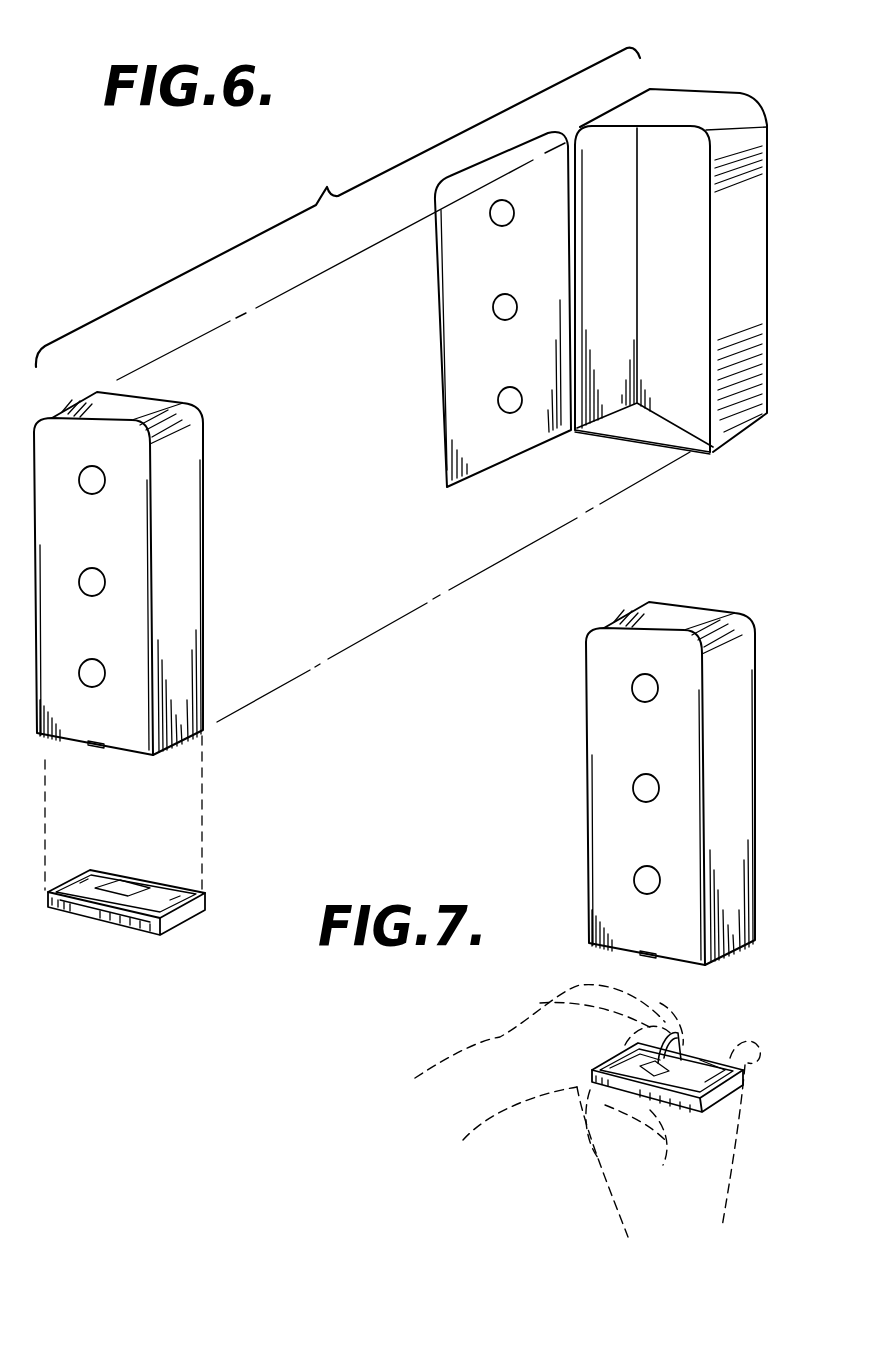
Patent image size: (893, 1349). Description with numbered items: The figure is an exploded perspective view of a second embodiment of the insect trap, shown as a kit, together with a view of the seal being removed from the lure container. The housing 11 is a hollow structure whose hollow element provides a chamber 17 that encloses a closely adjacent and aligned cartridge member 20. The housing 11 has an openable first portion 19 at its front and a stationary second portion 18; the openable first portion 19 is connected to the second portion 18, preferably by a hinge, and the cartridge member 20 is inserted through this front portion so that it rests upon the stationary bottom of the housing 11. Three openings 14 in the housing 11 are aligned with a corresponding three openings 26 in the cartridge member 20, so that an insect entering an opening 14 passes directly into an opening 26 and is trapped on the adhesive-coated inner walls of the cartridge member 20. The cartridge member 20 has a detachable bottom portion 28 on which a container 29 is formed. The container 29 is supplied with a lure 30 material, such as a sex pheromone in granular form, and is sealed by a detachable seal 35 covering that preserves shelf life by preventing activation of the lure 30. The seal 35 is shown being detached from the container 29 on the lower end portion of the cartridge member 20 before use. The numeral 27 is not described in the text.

In FIG. 6, the housing 11 is at (727, 447).
In FIG. 6, the openings 14 is at (505, 400).
In FIG. 6, the chamber 17 is at (653, 180).
In FIG. 6, the stationary second portion 18 is at (650, 125).
In FIG. 6, the openable first portion 19 is at (435, 182).
In FIG. 6, the cartridge member 20 is at (190, 589).
In FIG. 7, the cartridge member 20 is at (771, 981).
In FIG. 7, the openings 26 is at (637, 878).
In FIG. 7, the bracket body 27 is at (733, 695).
In FIG. 6, the detachable bottom portion 28 is at (177, 920).
In FIG. 7, the detachable bottom portion 28 is at (717, 1100).
In FIG. 7, the container 29 is at (720, 1068).
In FIG. 7, the lure 30 is at (683, 1057).
In FIG. 7, the seal 35 is at (653, 1070).